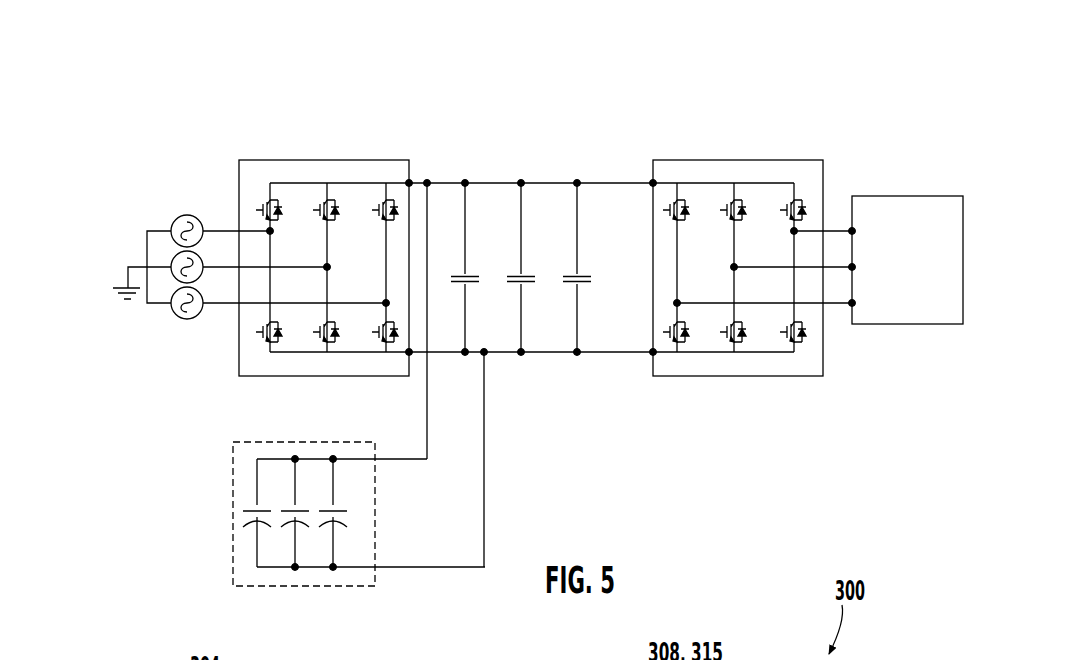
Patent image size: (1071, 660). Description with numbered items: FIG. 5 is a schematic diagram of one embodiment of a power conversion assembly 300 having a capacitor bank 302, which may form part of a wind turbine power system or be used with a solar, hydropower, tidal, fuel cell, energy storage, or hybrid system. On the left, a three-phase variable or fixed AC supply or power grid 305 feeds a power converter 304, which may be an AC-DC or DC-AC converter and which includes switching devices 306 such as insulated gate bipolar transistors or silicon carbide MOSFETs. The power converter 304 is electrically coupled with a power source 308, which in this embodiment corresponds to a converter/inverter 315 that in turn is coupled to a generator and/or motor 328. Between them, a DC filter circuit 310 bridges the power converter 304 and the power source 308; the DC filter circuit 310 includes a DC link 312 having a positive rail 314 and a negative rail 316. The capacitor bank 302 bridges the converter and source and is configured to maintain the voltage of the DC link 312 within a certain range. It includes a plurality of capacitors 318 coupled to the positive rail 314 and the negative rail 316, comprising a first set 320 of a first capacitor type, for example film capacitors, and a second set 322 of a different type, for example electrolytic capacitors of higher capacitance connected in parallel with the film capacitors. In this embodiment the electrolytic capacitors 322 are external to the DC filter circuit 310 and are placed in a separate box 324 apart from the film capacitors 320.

The power conversion assembly 300 is at (845, 75).
The capacitor bank 302 is at (430, 481).
The power converter 304 is at (248, 156).
The three-phase AC supply or power grid 305 is at (109, 316).
The switching devices 306 is at (332, 204).
The power source 308 is at (713, 155).
The converter/inverter 315 is at (765, 267).
The DC filter circuit 310 is at (726, 344).
The DC link 312 is at (611, 179).
The positive rail 314 is at (545, 183).
The negative rail 316 is at (607, 353).
The capacitors 318 is at (319, 382).
The first set of capacitors 320 is at (517, 283).
The second set of capacitors 322 is at (292, 521).
The separate box 324 is at (305, 586).
The generator/motor 328 is at (903, 192).